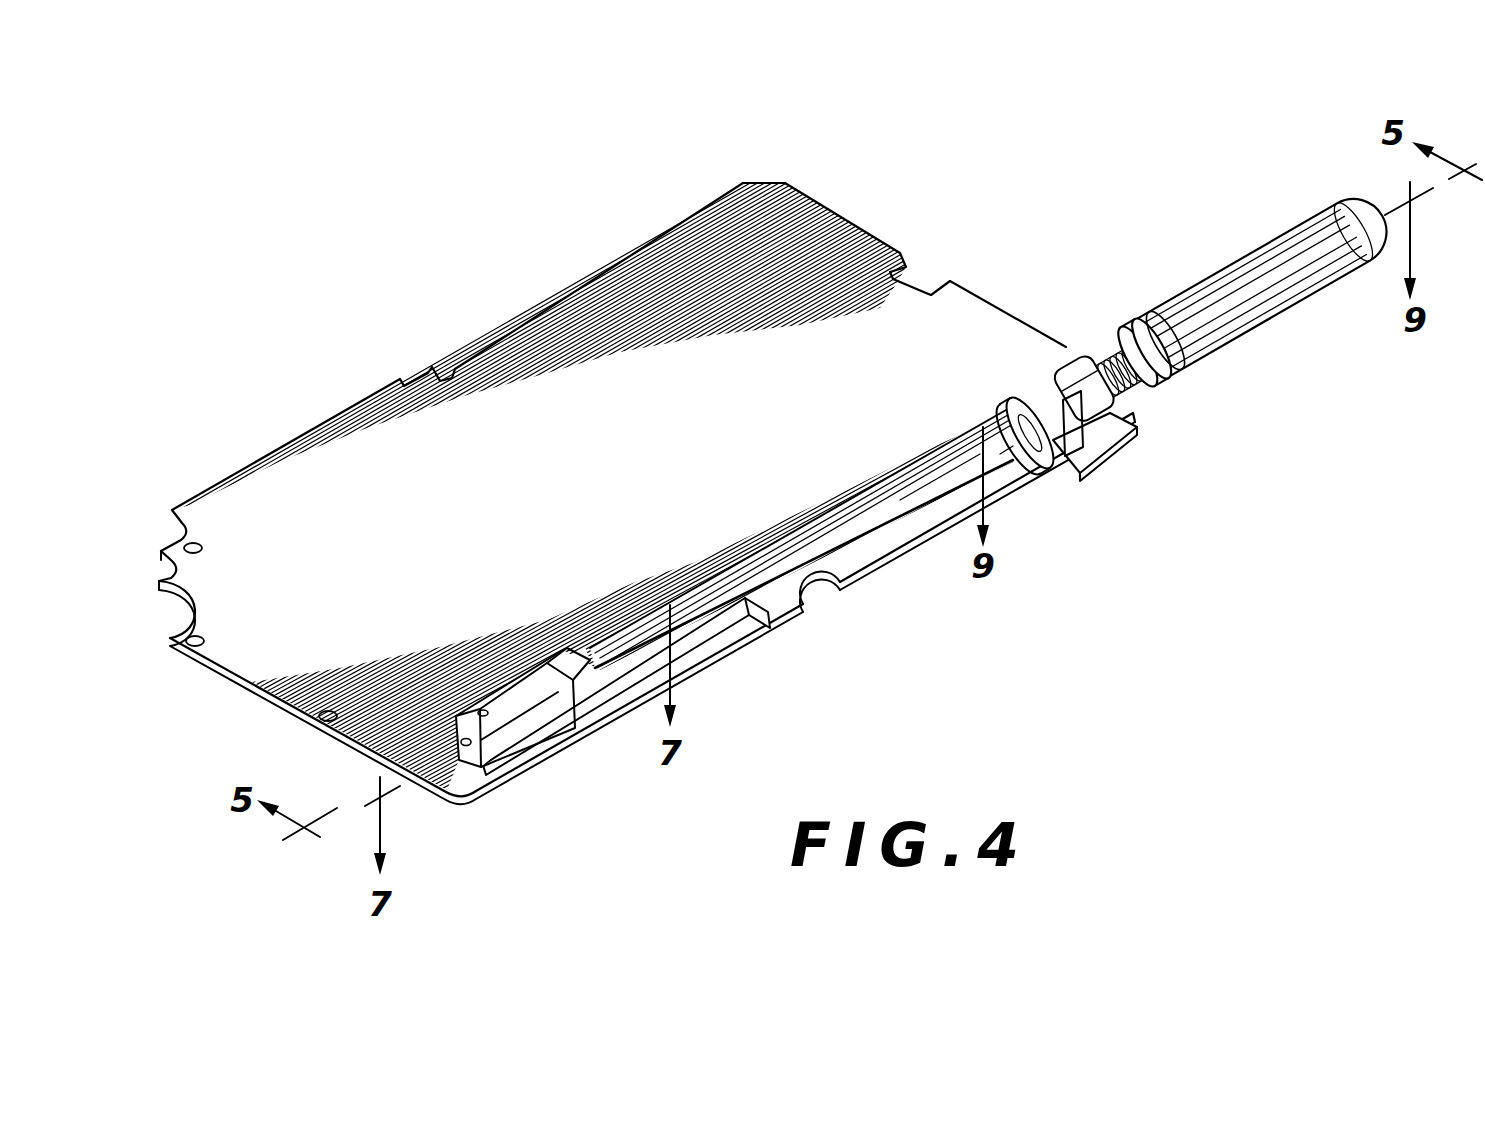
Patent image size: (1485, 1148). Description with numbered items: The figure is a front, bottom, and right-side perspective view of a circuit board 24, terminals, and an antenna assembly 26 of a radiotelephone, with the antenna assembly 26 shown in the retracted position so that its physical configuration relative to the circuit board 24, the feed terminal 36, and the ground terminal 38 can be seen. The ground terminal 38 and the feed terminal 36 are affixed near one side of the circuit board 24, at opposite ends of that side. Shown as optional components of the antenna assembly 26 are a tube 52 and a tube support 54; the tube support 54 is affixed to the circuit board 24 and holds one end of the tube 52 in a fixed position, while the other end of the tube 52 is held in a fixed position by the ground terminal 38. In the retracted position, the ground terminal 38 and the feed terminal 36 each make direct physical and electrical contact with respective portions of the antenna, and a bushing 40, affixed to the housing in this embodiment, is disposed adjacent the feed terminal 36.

The circuit board 24 is at (275, 493).
The antenna assembly 26 is at (1215, 425).
The feed terminal 36 is at (1058, 372).
The ground terminal 38 is at (448, 742).
The bushing 40 is at (1140, 392).
The tube 52 is at (788, 600).
The tube support 54 is at (1067, 457).